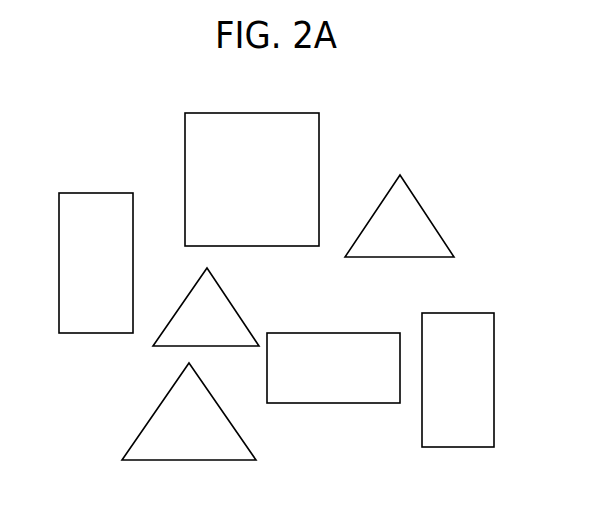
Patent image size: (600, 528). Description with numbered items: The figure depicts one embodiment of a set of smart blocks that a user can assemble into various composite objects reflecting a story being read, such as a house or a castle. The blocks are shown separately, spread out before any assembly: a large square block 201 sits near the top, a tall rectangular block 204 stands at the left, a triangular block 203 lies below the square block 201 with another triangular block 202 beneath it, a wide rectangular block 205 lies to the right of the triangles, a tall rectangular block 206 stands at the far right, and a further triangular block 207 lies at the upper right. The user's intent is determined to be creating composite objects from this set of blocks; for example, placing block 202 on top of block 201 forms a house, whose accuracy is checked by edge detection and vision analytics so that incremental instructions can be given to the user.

The block 201 is at (252, 179).
The block 202 is at (189, 411).
The block 203 is at (206, 307).
The block 204 is at (96, 263).
The block 205 is at (333, 368).
The block 206 is at (458, 380).
The block 207 is at (399, 216).